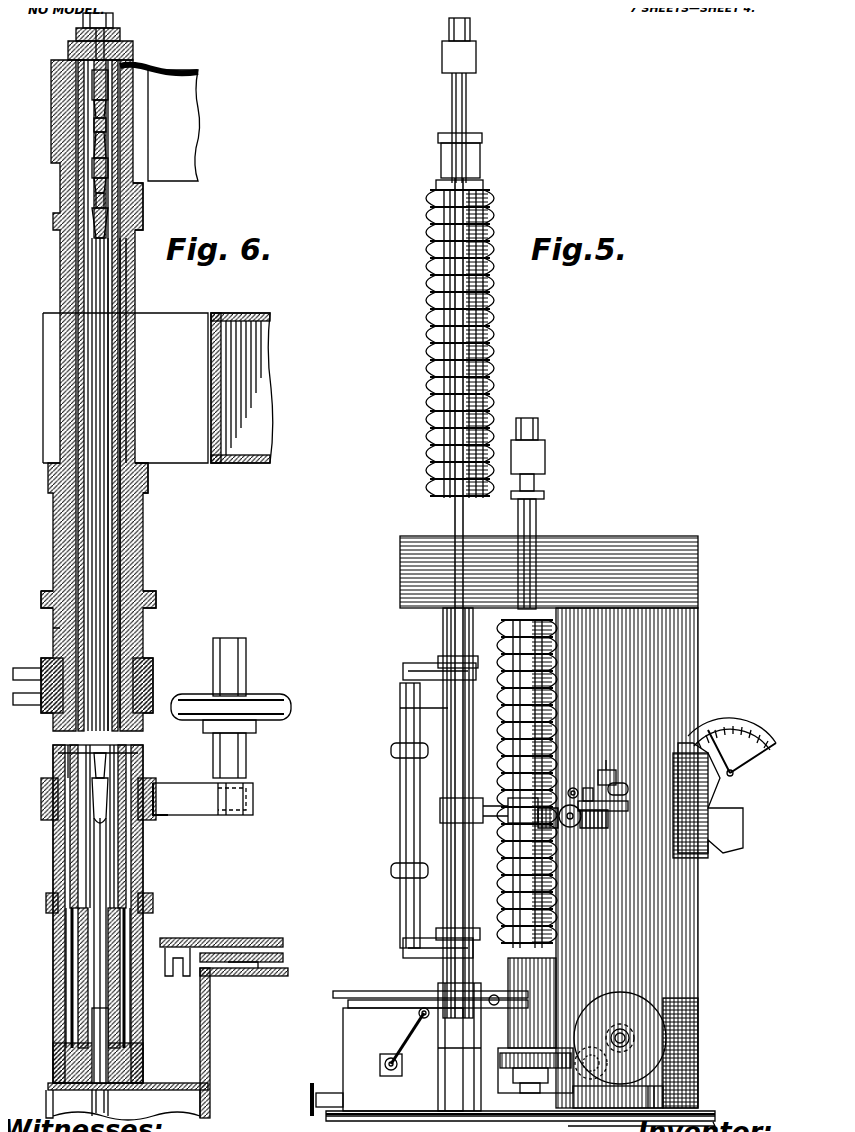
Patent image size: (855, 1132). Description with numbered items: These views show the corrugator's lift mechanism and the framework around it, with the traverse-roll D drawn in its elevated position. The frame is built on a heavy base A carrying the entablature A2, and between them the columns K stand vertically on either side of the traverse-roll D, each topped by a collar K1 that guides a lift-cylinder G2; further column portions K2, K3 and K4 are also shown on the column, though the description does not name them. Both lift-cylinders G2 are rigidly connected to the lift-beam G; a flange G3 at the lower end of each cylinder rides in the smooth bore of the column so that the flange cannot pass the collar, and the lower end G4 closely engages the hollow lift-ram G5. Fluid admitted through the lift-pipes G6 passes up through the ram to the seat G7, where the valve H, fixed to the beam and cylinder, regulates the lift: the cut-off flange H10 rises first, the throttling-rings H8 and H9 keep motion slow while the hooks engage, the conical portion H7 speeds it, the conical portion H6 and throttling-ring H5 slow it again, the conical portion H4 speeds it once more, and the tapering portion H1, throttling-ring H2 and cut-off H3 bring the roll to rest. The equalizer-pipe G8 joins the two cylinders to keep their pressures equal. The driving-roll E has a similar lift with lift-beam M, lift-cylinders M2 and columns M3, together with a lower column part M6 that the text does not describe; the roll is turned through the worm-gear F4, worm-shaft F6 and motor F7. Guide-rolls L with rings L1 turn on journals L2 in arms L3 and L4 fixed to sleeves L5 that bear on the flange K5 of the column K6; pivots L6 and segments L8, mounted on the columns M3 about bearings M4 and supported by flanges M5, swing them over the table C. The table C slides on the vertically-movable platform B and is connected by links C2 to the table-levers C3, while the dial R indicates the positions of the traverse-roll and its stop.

In FIG. 6, the base A is at (212, 1028).
In FIG. 5, the base A is at (340, 1036).
In FIG. 6, the entablature A2 is at (238, 450).
In FIG. 5, the vertically-movable platform B is at (340, 990).
In FIG. 5, the table C is at (350, 992).
In FIG. 5, the links C2 is at (413, 1000).
In FIG. 5, the table-levers C3 is at (395, 1038).
In FIG. 5, the traverse-roll D is at (492, 320).
In FIG. 5, the driving-roll E is at (490, 728).
In FIG. 5, the worm-gear F4 is at (548, 1060).
In FIG. 5, the worm-shaft F6 is at (590, 1056).
In FIG. 5, the motor F7 is at (620, 1018).
In FIG. 6, the lift-beam G is at (174, 125).
In FIG. 5, the lift-beam G is at (455, 48).
In FIG. 6, the lift-cylinders G2 is at (118, 272).
In FIG. 5, the lift-cylinders G2 is at (460, 106).
In FIG. 6, the flange G3 is at (110, 845).
In FIG. 6, the lower end of lift-cylinder G4 is at (112, 915).
In FIG. 6, the lift-ram G5 is at (84, 140).
In FIG. 6, the lift-pipes G6 is at (98, 1090).
In FIG. 6, the seat G7 is at (84, 66).
In FIG. 6, the equalizer-pipe G8 is at (157, 52).
In FIG. 6, the valve H is at (100, 515).
In FIG. 6, the tapering portion H1 is at (86, 788).
In FIG. 6, the throttling-ring H2 is at (84, 818).
In FIG. 6, the cut-off H3 is at (70, 838).
In FIG. 6, the conical portion H4 is at (84, 203).
In FIG. 6, the throttling-ring H5 is at (88, 190).
In FIG. 6, the conical portion H6 is at (86, 176).
In FIG. 6, the conical portion H7 is at (86, 122).
In FIG. 6, the throttling-ring H8 is at (88, 104).
In FIG. 6, the throttling-ring H9 is at (86, 92).
In FIG. 6, the cut-off flange H10 is at (75, 42).
In FIG. 6, the columns K is at (127, 322).
In FIG. 6, the collar K1 is at (135, 212).
In FIG. 6, the flange K2 is at (135, 485).
In FIG. 6, the flange K3 is at (138, 596).
In FIG. 6, the clamp ring K4 is at (135, 648).
In FIG. 6, the flange K5 is at (140, 882).
In FIG. 6, the column K6 is at (130, 1020).
In FIG. 5, the column K6 is at (430, 1018).
In FIG. 6, the guide-rolls L is at (235, 648).
In FIG. 5, the guide-rolls L is at (392, 793).
In FIG. 6, the rings or projections L1 is at (265, 684).
In FIG. 5, the rings or projections L1 is at (385, 870).
In FIG. 6, the journals L2 is at (245, 776).
In FIG. 6, the arm L3 is at (185, 798).
In FIG. 5, the arm L3 is at (430, 945).
In FIG. 5, the arm L4 is at (415, 658).
In FIG. 6, the sleeves L5 is at (45, 620).
In FIG. 5, the sleeves L5 is at (392, 700).
In FIG. 6, the pivots L6 is at (20, 700).
In FIG. 5, the pivots L6 is at (475, 793).
In FIG. 5, the segments L8 is at (490, 815).
In FIG. 5, the lift-beam M is at (520, 448).
In FIG. 5, the lift-cylinders M2 is at (526, 472).
In FIG. 5, the columns M3 is at (528, 506).
In FIG. 5, the bearings M4 is at (560, 763).
In FIG. 5, the flanges M5 is at (560, 818).
In FIG. 5, the cylinder M6 is at (548, 956).
In FIG. 5, the dial R is at (748, 696).